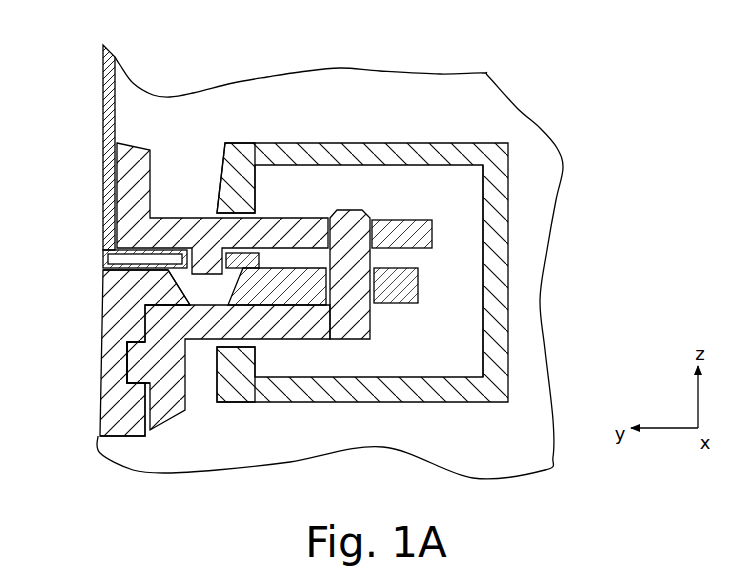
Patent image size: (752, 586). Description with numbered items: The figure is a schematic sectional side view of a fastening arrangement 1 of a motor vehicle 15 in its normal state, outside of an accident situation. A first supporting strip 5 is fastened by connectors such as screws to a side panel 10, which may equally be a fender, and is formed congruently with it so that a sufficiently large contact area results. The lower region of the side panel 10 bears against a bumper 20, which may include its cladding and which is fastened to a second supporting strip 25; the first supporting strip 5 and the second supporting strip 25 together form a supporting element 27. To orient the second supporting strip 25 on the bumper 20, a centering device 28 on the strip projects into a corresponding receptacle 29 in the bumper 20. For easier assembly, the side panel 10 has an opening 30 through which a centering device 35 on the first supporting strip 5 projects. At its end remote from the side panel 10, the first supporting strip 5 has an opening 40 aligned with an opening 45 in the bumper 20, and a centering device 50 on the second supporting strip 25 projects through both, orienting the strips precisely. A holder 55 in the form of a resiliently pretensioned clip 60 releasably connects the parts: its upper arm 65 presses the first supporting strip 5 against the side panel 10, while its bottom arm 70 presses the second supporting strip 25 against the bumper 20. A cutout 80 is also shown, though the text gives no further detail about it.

The fastening arrangement 1 is at (308, 102).
The first supporting strip 5 is at (132, 160).
The side panel/fender 10 is at (105, 113).
The motor vehicle 15 is at (505, 448).
The bumper 20 is at (125, 353).
The second supporting strip 25 is at (163, 388).
The supporting element 27 is at (390, 198).
The centering device 28 is at (122, 385).
The receptacle 29 is at (128, 380).
The receptacle 30 is at (212, 265).
The centering device 35 is at (165, 286).
The receptacle 40 is at (330, 225).
The receptacle 45 is at (360, 265).
The centering device 50 is at (370, 263).
The holder 55 is at (522, 349).
The clip 60 is at (488, 187).
The arm 65 is at (242, 175).
The arm 70 is at (232, 375).
The cutout 80 is at (150, 300).